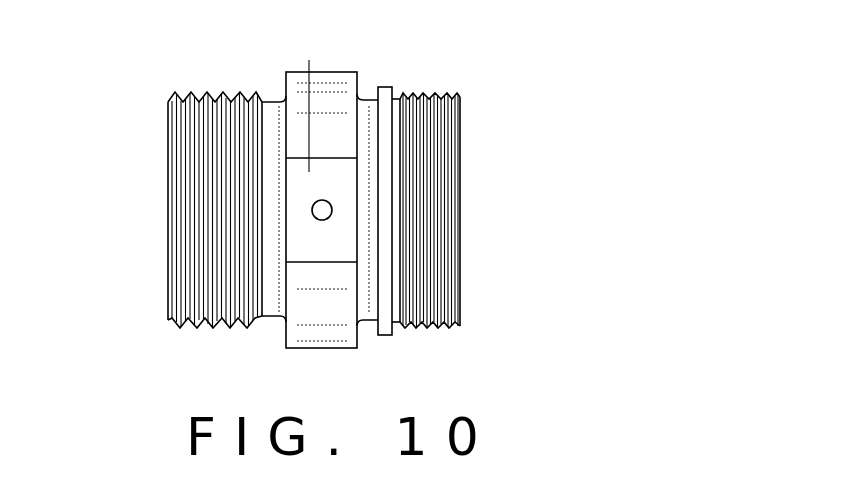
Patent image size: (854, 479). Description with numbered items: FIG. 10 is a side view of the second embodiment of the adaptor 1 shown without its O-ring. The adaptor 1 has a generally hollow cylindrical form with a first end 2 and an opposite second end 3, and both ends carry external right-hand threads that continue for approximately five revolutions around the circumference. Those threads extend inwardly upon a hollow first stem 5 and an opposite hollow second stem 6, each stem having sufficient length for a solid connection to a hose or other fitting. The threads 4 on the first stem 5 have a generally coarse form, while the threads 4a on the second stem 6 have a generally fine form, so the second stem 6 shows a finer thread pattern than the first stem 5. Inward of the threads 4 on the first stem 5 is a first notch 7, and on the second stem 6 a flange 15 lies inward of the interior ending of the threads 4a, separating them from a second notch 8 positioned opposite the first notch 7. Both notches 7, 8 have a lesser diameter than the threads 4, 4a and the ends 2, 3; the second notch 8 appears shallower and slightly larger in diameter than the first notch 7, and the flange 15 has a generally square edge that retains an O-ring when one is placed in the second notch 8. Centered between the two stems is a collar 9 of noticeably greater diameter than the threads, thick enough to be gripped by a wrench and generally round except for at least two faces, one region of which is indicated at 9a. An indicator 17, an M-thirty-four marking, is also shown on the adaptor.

The adaptor 1 is at (130, 115).
The first end 2 is at (168, 186).
The second end 3 is at (461, 165).
The threads 4 is at (190, 90).
The threads 4a is at (427, 93).
The first stem 5 is at (222, 78).
The second stem 6 is at (458, 252).
The first notch 7 is at (273, 100).
The second notch 8 is at (364, 325).
The collar 9 is at (358, 73).
The hex flat 9a is at (309, 60).
The flange 15 is at (382, 338).
The M34 indicator 17 is at (318, 220).